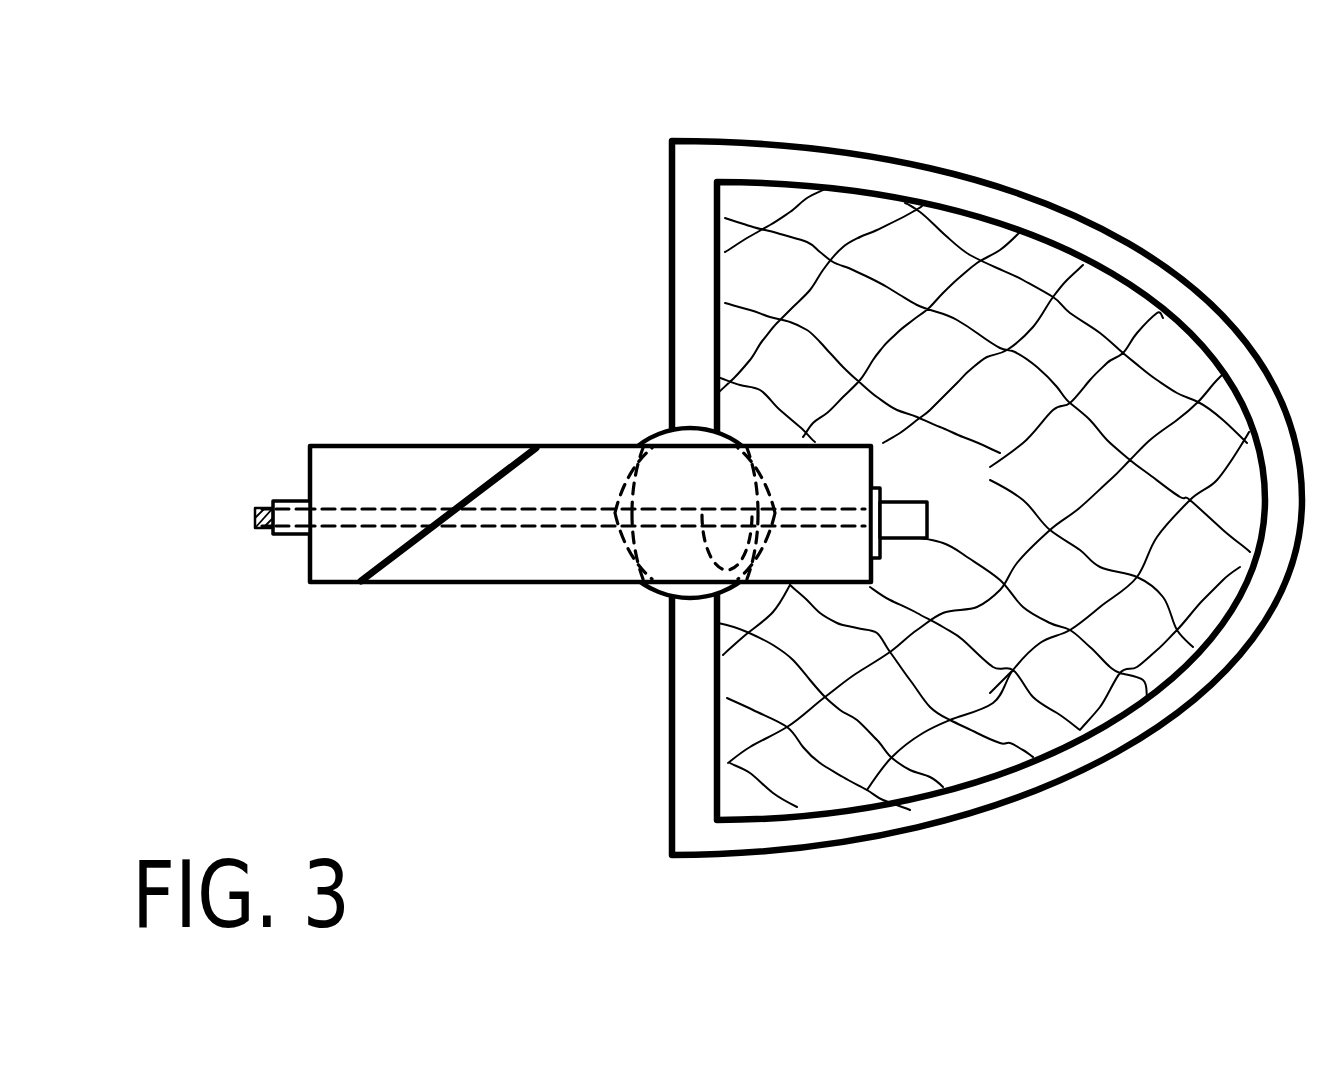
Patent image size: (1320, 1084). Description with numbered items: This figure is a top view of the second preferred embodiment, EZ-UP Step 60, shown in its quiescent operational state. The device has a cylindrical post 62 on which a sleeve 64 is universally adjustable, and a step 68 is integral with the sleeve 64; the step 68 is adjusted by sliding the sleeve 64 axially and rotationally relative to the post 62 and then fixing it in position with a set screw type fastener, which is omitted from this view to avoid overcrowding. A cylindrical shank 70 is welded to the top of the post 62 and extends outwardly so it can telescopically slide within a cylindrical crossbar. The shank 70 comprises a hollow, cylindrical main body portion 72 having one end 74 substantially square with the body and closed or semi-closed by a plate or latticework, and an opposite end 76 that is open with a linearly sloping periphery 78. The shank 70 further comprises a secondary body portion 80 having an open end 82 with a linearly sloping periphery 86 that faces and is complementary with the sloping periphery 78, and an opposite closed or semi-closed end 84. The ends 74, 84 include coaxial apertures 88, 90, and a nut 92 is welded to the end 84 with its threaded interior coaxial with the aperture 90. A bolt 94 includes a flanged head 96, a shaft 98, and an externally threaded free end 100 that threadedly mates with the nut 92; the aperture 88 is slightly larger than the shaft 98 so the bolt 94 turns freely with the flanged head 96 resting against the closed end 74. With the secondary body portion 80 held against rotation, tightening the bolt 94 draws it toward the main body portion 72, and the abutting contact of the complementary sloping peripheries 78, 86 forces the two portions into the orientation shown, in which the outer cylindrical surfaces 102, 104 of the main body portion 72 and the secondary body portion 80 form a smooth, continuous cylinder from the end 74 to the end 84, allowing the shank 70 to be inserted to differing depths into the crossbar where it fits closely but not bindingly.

The EZ-UP Step 60 is at (430, 220).
The cylindrical post 62 is at (684, 477).
The sleeve 64 is at (652, 435).
The step 68 is at (950, 800).
The cylindrical shank 70 is at (258, 416).
The main body portion 72 is at (540, 557).
The end 74 is at (875, 561).
The opposite end 76 is at (392, 562).
The linearly sloping periphery 78 is at (432, 532).
The secondary body portion 80 is at (346, 444).
The open end 82 is at (500, 470).
The end 84 is at (300, 560).
The linearly sloping periphery 86 is at (467, 488).
The aperture 88 is at (858, 512).
The aperture 90 is at (312, 509).
The nut 92 is at (291, 499).
The bolt 94 is at (733, 583).
The flanged head 96 is at (907, 493).
The shaft 98 is at (513, 512).
The externally threaded free end 100 is at (254, 513).
The outer cylindrical surface 102 is at (592, 443).
The outer cylindrical surface 104 is at (331, 588).